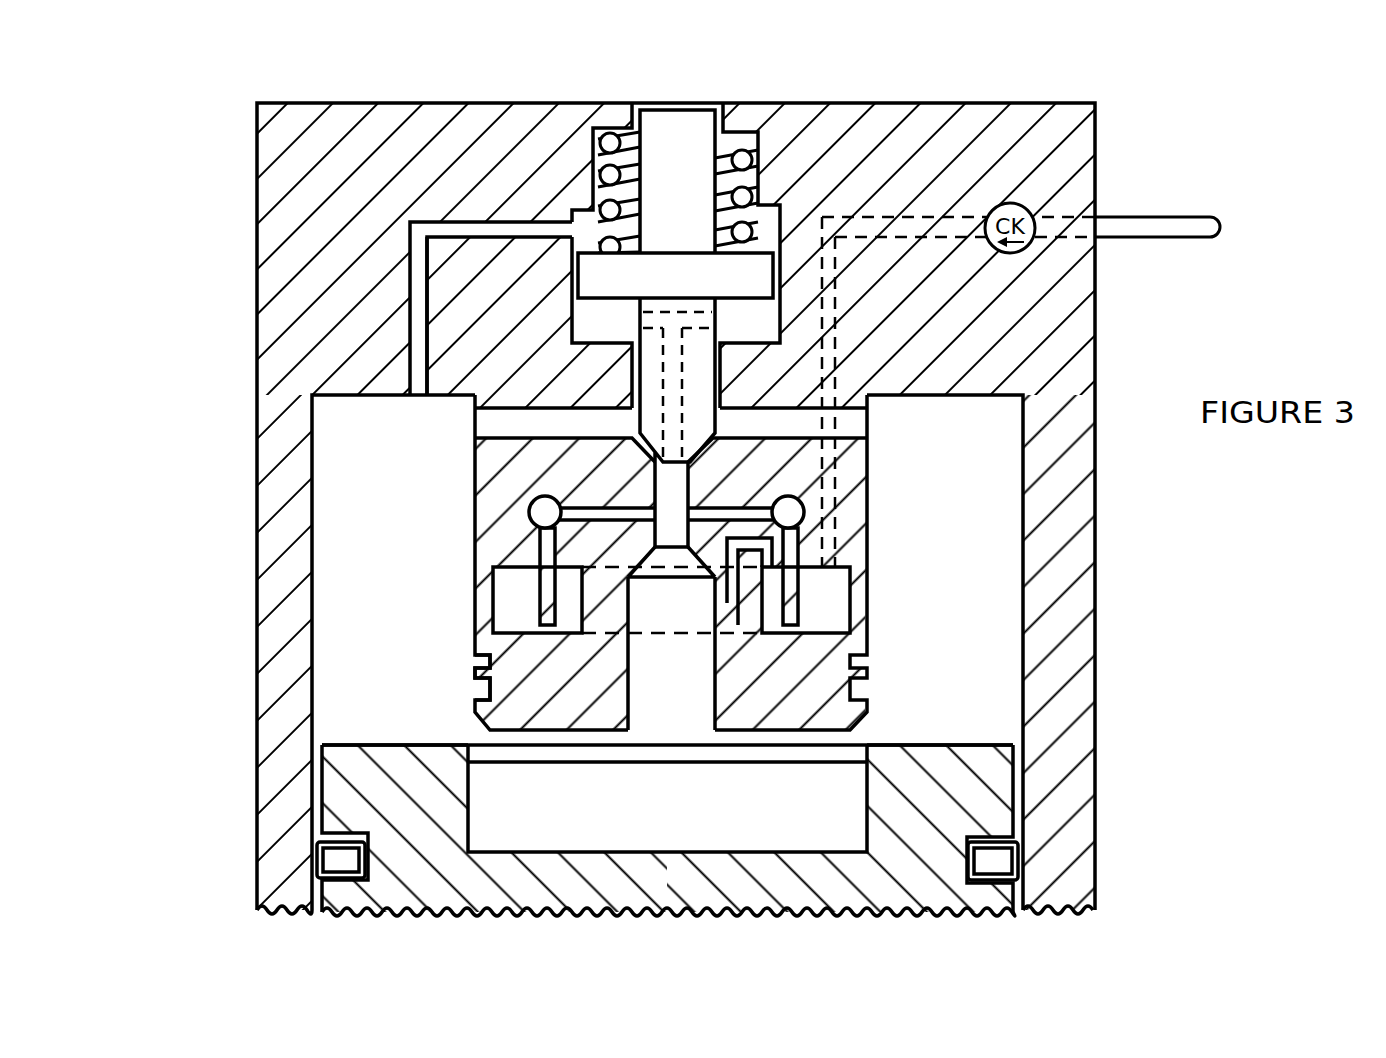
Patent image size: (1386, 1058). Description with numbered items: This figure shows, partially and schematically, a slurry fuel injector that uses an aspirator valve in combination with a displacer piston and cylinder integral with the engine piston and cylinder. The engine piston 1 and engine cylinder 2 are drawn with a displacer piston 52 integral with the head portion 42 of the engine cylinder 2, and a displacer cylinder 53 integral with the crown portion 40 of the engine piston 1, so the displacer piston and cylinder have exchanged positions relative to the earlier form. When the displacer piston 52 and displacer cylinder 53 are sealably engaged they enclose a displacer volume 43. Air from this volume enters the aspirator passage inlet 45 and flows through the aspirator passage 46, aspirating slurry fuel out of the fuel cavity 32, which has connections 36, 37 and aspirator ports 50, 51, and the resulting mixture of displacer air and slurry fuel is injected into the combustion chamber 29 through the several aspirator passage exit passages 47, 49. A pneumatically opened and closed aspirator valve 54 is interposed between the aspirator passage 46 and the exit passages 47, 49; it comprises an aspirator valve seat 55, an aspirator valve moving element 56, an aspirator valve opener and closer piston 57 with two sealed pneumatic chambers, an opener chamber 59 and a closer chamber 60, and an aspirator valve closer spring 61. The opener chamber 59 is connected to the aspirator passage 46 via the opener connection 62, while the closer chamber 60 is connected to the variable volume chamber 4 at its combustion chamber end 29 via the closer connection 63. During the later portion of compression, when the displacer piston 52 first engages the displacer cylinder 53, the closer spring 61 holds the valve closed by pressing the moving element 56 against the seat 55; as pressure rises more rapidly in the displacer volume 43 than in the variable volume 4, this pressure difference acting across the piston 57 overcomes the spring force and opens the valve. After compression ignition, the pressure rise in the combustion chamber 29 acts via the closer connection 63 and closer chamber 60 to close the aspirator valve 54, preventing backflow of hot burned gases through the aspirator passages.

The engine piston 1 is at (978, 897).
The engine cylinder 2 is at (312, 807).
The variable volume chamber 4 is at (365, 688).
The combustion chamber 29 is at (978, 468).
The fuel cavity 32 is at (832, 612).
The connection 36 is at (795, 605).
The connection 37 is at (757, 650).
The crown portion 40 is at (357, 765).
The head portion 42 is at (495, 425).
The displacer volume 43 is at (873, 815).
The aspirator passage inlet 45 is at (675, 680).
The aspirator passage 46 is at (510, 527).
The aspirator passage exit passage 47 is at (512, 452).
The aspirator passage exit passage 49 is at (852, 427).
The aspirator port 50 is at (720, 380).
The aspirator port 51 is at (372, 676).
The displacer piston 52 is at (522, 572).
The displacer cylinder 53 is at (810, 835).
The aspirator valve 54 is at (670, 135).
The aspirator valve seat 55 is at (975, 452).
The aspirator valve moving element 56 is at (410, 390).
The aspirator valve opener and closer piston 57 is at (782, 293).
The opener chamber 59 is at (590, 322).
The closer chamber 60 is at (587, 220).
The aspirator valve closer spring 61 is at (742, 290).
The opener connection 62 is at (672, 397).
The closer connection 63 is at (477, 230).